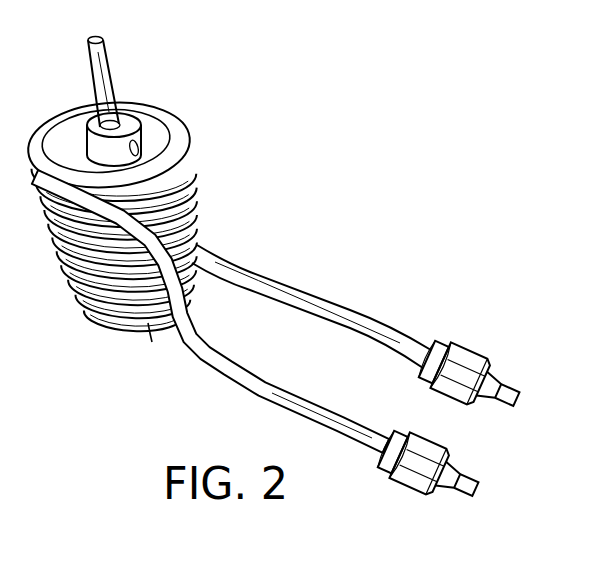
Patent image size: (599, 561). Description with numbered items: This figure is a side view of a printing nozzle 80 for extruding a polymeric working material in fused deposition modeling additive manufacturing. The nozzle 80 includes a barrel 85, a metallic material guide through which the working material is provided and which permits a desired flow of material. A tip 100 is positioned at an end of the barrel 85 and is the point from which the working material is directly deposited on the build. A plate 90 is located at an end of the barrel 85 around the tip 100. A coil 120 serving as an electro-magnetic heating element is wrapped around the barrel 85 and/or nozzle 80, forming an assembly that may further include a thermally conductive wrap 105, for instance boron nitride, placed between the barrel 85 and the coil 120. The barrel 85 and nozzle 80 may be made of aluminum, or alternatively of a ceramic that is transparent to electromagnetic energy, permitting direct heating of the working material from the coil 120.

The nozzle 80 is at (276, 274).
The barrel 85 is at (110, 70).
The plate 90 is at (103, 317).
The tip 100 is at (148, 352).
The thermally conductive wrap 105 is at (160, 137).
The coil 120 is at (200, 224).